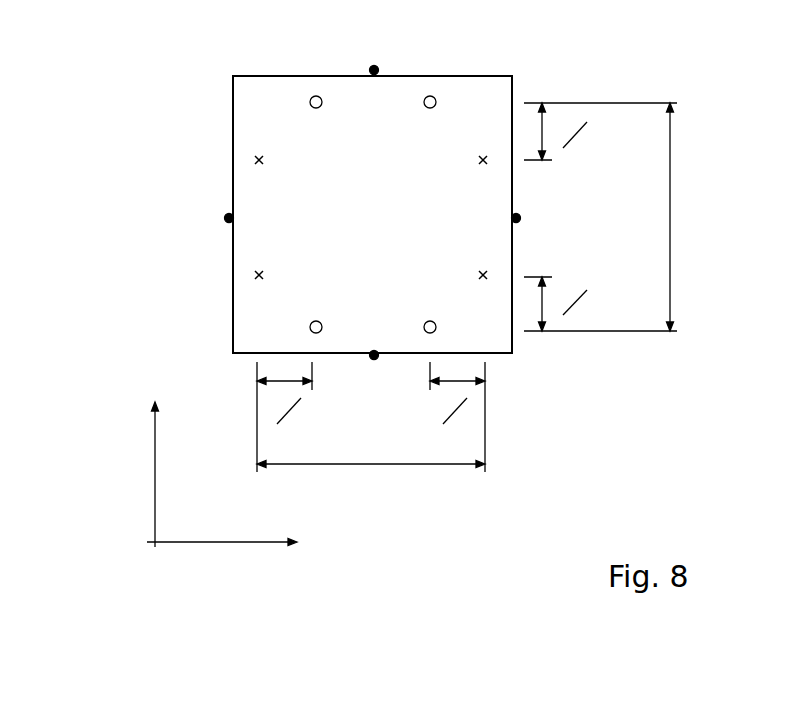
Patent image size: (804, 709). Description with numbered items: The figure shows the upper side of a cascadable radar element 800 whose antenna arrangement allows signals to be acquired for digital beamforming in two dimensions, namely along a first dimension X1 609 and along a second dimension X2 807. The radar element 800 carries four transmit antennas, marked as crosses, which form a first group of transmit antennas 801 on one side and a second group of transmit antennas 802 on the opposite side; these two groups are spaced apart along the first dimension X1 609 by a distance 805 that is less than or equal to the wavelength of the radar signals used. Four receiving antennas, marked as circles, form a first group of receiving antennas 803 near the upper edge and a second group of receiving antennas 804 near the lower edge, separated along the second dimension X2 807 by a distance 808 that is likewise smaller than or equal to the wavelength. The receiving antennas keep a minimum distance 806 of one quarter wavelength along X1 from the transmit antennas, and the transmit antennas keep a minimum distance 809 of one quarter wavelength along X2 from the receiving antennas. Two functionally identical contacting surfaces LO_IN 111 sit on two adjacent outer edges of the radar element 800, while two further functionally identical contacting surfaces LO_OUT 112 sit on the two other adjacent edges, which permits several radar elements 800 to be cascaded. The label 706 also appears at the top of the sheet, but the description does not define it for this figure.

The antenna element 706 is at (319, 16).
The radar element 800 is at (438, 62).
The contacting surfaces LO_IN 111 is at (285, 133).
The contacting surfaces LO_OUT 112 is at (464, 301).
The first group of transmit antennas 801 is at (268, 162).
The second group of transmit antennas 802 is at (474, 162).
The first group of receiving antennas 803 is at (431, 110).
The second group of receiving antennas 804 is at (431, 319).
The distance 805 is at (380, 486).
The minimum distance 806 is at (433, 427).
The second dimension X2 807 is at (115, 403).
The distance 808 is at (708, 217).
The minimum distance 809 is at (586, 163).
The first dimension X1 609 is at (274, 580).